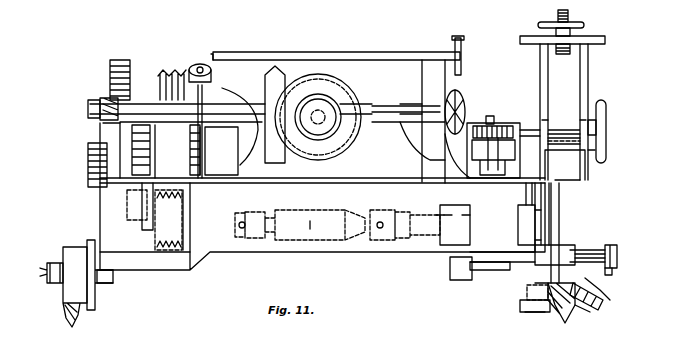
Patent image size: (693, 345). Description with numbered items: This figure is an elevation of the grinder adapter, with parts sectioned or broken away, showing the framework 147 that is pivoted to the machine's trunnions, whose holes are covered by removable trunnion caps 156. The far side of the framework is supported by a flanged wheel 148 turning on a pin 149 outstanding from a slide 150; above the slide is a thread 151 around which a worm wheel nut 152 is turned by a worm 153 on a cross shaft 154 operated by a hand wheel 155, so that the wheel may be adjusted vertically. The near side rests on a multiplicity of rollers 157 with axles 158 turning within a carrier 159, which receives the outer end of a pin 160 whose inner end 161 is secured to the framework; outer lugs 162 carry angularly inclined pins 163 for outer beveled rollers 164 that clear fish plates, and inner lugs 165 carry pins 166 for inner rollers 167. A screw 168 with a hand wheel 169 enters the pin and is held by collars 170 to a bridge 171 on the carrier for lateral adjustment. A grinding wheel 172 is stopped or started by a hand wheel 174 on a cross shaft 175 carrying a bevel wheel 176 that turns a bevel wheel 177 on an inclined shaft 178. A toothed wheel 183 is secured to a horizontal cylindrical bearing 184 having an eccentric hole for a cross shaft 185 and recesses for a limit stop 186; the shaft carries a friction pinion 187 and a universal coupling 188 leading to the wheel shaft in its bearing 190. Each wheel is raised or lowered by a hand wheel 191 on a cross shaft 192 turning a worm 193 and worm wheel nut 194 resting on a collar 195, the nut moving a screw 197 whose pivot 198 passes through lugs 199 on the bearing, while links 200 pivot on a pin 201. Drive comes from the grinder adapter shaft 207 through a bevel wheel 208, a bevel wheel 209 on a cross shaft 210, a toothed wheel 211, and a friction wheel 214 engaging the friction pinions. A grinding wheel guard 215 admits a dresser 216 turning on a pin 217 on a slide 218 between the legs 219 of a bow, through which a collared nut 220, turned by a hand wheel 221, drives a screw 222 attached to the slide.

The framework 147 is at (318, 210).
The flanged wheel 148 is at (72, 255).
The pin 149 is at (50, 283).
The slide 150 is at (98, 286).
The thread 151 is at (90, 164).
The worm wheel nut 152 is at (88, 107).
The worm 153 is at (104, 100).
The cross shaft 154 is at (100, 112).
The hand wheel 155 is at (420, 100).
The trunnion caps 156 is at (370, 100).
The rollers 157 is at (555, 305).
The axles 158 is at (527, 298).
The carrier 159 is at (490, 270).
The pin 160 is at (575, 255).
The inner end 161 is at (321, 171).
The outer lugs 162 is at (600, 305).
The angularly inclined pins 163 is at (605, 305).
The outer beveled rollers 164 is at (580, 308).
The inner lugs 165 is at (521, 306).
The pins 166 is at (527, 313).
The inner rollers 167 is at (540, 300).
The screw 168 is at (606, 252).
The hand wheel 169 is at (608, 258).
The collars 170 is at (617, 250).
The bridge 171 is at (608, 272).
The grinding wheel 172 is at (546, 223).
The hand wheel 174 is at (455, 41).
The cross shaft 175 is at (383, 55).
The bevel wheel 176 is at (206, 62).
The bevel wheel 177 is at (200, 72).
The inclined shaft 178 is at (254, 92).
The toothed wheel 183 is at (128, 200).
The horizontal cylindrical bearing 184 is at (140, 213).
The cross shaft 185 is at (150, 228).
The limit stop 186 is at (135, 195).
The friction pinion 187 is at (170, 242).
The universal coupling 188 is at (322, 240).
The bearing 190 is at (462, 240).
The hand wheel 191 is at (606, 108).
The cross shaft 192 is at (527, 130).
The worm 193 is at (488, 124).
The worm wheel nut 194 is at (460, 108).
The collar 195 is at (500, 118).
The screw 197 is at (490, 120).
The pivot 198 is at (552, 195).
The lugs 199 is at (575, 175).
The links 200 is at (440, 228).
The pin 201 is at (455, 232).
The grinder adapter shaft 207 is at (318, 117).
The bevel wheel 208 is at (320, 74).
The bevel wheel 209 is at (285, 66).
The cross shaft 210 is at (200, 170).
The toothed wheel 211 is at (110, 77).
The friction wheel 214 is at (165, 86).
The grinding wheel guard 215 is at (590, 168).
The dresser 216 is at (590, 152).
The pin 217 is at (582, 145).
The slide 218 is at (564, 112).
The legs 219 is at (540, 55).
The collared nut 220 is at (566, 40).
The hand wheel 221 is at (538, 26).
The screw 222 is at (572, 50).